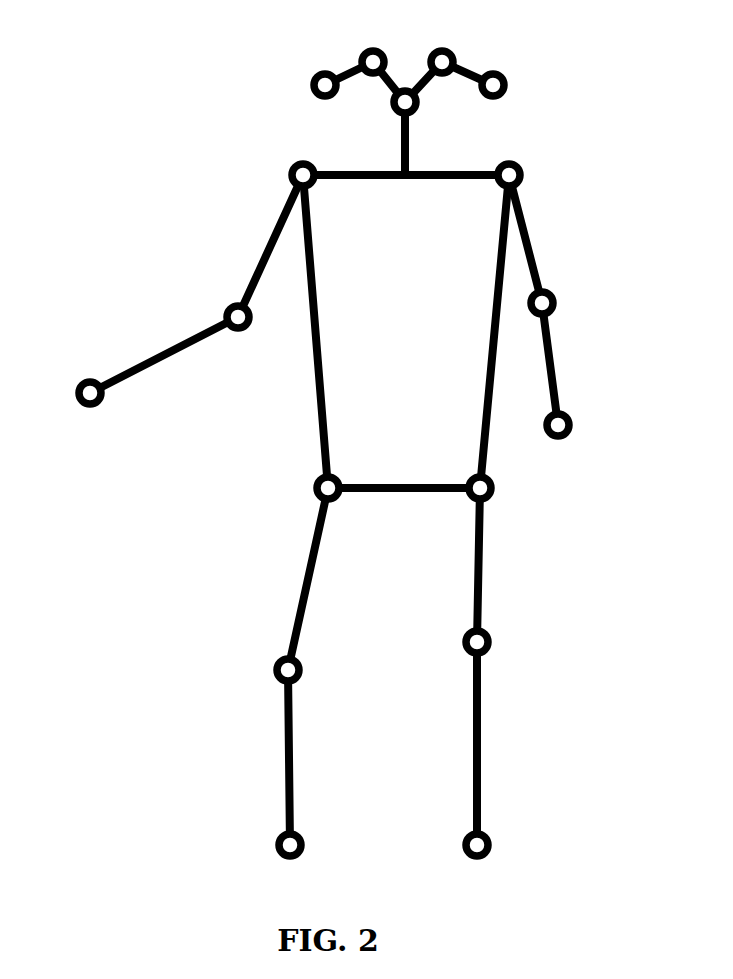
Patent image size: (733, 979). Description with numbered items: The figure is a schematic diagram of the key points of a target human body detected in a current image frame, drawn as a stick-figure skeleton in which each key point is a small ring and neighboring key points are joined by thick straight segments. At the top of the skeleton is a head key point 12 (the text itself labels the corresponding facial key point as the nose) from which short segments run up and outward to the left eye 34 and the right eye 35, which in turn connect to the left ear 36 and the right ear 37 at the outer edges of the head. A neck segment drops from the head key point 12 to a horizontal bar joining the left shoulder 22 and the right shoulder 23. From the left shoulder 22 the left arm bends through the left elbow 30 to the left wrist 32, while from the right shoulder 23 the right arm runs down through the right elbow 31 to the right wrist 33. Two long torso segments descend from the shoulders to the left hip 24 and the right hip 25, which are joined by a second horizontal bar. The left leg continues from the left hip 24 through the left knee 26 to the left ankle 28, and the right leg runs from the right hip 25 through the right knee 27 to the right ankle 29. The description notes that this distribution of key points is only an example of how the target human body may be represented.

The head joint 12 is at (420, 108).
The left shoulder 22 is at (289, 166).
The right shoulder 23 is at (519, 167).
The left hip 24 is at (333, 474).
The right hip 25 is at (467, 478).
The left knee 26 is at (276, 660).
The right knee 27 is at (488, 638).
The left ankle 28 is at (301, 836).
The right ankle 29 is at (485, 836).
The left elbow 30 is at (229, 306).
The right elbow 31 is at (555, 296).
The left wrist 32 is at (82, 383).
The right wrist 33 is at (569, 417).
The left eye 34 is at (362, 51).
The right eye 35 is at (448, 50).
The left ear 36 is at (314, 75).
The right ear 37 is at (506, 74).